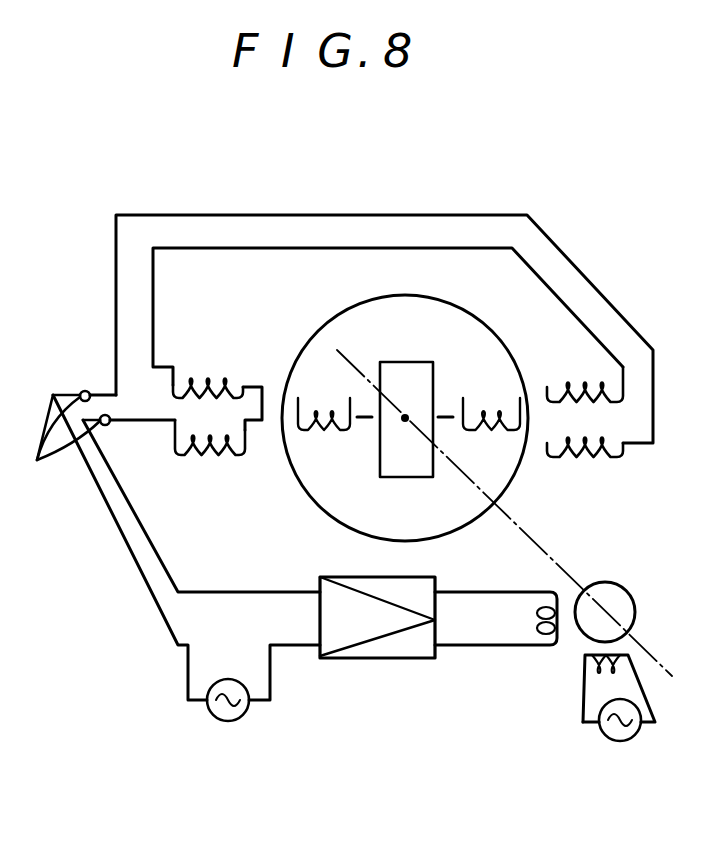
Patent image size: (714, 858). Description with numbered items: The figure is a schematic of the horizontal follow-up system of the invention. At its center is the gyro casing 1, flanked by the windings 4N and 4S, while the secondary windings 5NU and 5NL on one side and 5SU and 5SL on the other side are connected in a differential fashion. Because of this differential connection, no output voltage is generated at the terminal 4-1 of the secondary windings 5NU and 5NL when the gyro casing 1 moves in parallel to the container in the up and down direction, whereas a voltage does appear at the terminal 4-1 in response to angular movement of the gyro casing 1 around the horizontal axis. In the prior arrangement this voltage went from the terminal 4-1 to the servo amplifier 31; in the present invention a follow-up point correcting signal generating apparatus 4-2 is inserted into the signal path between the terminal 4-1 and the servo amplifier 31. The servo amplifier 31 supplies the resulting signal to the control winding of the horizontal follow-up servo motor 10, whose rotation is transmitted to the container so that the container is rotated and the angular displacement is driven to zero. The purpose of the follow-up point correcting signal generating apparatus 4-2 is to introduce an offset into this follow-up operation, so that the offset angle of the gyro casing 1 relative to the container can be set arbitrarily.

The gyro casing 1 is at (308, 497).
The primary winding (N side) 4N is at (318, 408).
The primary winding (S side) 4S is at (487, 408).
The secondary winding (N upper) 5NU is at (213, 378).
The secondary winding (N lower) 5NL is at (200, 457).
The secondary winding (S upper) 5SU is at (600, 404).
The secondary winding (S lower) 5SL is at (583, 459).
The terminal 4-1 is at (59, 443).
The follow-up point correcting signal generating apparatus 4-2 is at (238, 721).
The servo amplifier 31 is at (375, 660).
The horizontal follow-up servo motor 10 is at (632, 597).